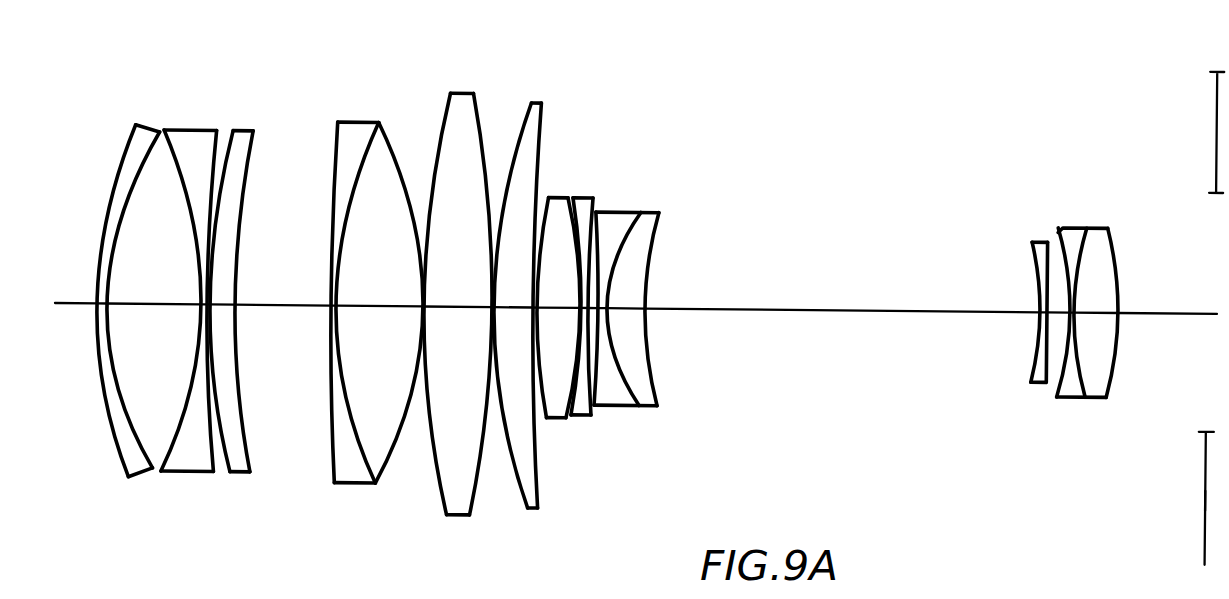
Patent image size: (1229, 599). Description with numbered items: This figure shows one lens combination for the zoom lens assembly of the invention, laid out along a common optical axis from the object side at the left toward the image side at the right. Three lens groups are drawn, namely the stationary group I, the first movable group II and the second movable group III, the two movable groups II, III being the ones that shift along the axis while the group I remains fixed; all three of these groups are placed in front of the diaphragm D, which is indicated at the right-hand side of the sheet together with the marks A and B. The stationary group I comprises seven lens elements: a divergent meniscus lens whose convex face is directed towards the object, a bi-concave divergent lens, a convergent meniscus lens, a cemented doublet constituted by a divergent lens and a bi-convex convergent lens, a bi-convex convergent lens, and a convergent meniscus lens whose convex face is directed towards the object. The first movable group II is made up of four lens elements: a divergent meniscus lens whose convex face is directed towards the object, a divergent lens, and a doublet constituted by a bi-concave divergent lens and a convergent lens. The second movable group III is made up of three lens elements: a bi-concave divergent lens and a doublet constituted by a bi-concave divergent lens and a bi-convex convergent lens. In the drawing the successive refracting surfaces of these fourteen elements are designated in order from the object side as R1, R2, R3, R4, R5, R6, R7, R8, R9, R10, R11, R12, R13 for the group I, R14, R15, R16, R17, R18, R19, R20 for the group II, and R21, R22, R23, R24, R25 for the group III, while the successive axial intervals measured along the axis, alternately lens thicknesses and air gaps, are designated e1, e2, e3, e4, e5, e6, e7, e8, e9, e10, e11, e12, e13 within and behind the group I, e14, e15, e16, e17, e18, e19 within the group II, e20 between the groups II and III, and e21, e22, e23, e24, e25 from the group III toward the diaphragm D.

The stationary group I is at (547, 75).
The first movable group II is at (680, 139).
The second movable group III is at (1133, 125).
The first refracting surface R1 is at (128, 151).
The second refracting surface R2 is at (115, 248).
The third refracting surface R3 is at (176, 163).
The fourth refracting surface R4 is at (216, 136).
The fifth refracting surface R5 is at (225, 162).
The sixth refracting surface R6 is at (243, 217).
The seventh refracting surface R7 is at (335, 122).
The eighth refracting surface R8 is at (349, 215).
The ninth refracting surface R9 is at (389, 165).
The tenth refracting surface R10 is at (448, 110).
The eleventh refracting surface R11 is at (476, 102).
The twelfth refracting surface R12 is at (512, 150).
The thirteenth refracting surface R13 is at (540, 111).
The fourteenth refracting surface R14 is at (551, 197).
The fifteenth refracting surface R15 is at (570, 211).
The sixteenth refracting surface R16 is at (578, 250).
The seventeenth refracting surface R17 is at (590, 262).
The eighteenth refracting surface R18 is at (598, 270).
The nineteenth refracting surface R19 is at (612, 288).
The twentieth refracting surface R20 is at (648, 286).
The twenty-first refracting surface R21 is at (1034, 261).
The twenty-second refracting surface R22 is at (1044, 277).
The twenty-third refracting surface R23 is at (1060, 247).
The twenty-fourth refracting surface R24 is at (1081, 223).
The twenty-fifth refracting surface R25 is at (1110, 227).
The axial thickness of first lens e1 is at (98, 301).
The axial air space between first and second lenses e2 is at (128, 304).
The axial thickness of second lens e3 is at (200, 301).
The axial air space between second and third lenses e4 is at (210, 305).
The axial thickness of third lens e5 is at (226, 302).
The axial air space between third and fourth lenses e6 is at (279, 305).
The axial thickness of fourth lens e7 is at (330, 302).
The axial thickness of fifth lens e8 is at (384, 301).
The axial air space between fifth and sixth lenses e9 is at (422, 302).
The axial thickness of sixth lens e10 is at (474, 305).
The axial air space between sixth and seventh lenses e11 is at (489, 302).
The axial thickness of seventh lens e12 is at (515, 302).
The axial air space between first and second lens groups e13 is at (533, 305).
The axial thickness of eighth lens e14 is at (558, 305).
The axial air space between eighth and ninth lenses e15 is at (579, 304).
The axial thickness of ninth lens e16 is at (585, 305).
The axial air space between ninth and tenth lenses e17 is at (593, 305).
The axial thickness of tenth lens e18 is at (602, 305).
The axial thickness of eleventh lens e19 is at (626, 305).
The axial air space between second and third lens groups e20 is at (800, 304).
The axial thickness of twelfth lens e21 is at (1043, 304).
The axial air space between twelfth and thirteenth lenses e22 is at (1057, 312).
The axial thickness of thirteenth lens e23 is at (1076, 300).
The axial thickness of fourteenth lens e24 is at (1108, 304).
The back focal distance e25 is at (1187, 304).
The aperture stop / diaphragm scale mark A is at (1213, 63).
The image-side reference mark B is at (1206, 489).
The diaphragm D is at (1205, 421).